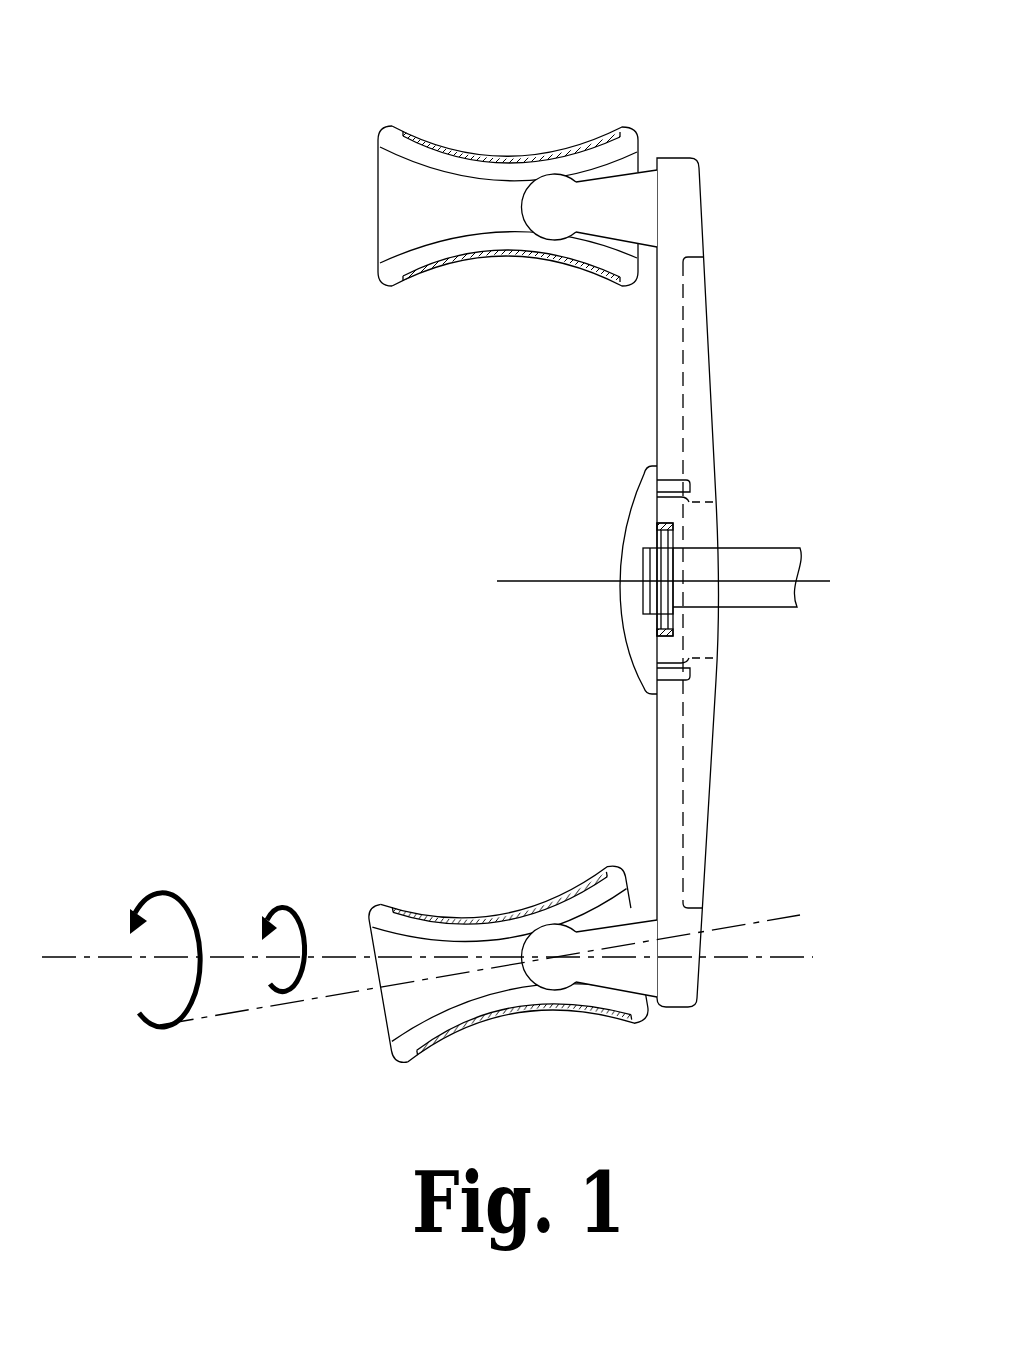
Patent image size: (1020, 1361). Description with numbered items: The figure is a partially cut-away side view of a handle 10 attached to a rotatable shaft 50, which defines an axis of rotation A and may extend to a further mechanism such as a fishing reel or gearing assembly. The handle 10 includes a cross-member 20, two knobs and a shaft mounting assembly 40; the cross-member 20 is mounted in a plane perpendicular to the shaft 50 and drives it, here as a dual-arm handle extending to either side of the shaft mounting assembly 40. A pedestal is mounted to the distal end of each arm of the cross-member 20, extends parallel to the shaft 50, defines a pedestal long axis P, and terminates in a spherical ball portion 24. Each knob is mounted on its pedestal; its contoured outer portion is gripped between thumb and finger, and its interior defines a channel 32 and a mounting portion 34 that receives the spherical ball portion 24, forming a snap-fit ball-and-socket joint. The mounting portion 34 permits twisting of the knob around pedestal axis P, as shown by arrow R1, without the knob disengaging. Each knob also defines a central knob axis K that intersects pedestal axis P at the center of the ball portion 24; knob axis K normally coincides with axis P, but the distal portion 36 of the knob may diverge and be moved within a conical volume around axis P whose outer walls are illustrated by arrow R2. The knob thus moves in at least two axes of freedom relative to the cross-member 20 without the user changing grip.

The handle 10 is at (200, 345).
The cross-member 20 is at (683, 227).
The spherical ball portion 24 is at (545, 215).
The channel 32 is at (403, 208).
The mounting portion 34 is at (545, 165).
The distal portion 36 is at (378, 988).
The shaft mounting assembly 40 is at (600, 523).
The rotatable shaft 50 is at (733, 603).
The axis of rotation A is at (648, 580).
The knob axis K is at (320, 997).
The pedestal long axis P is at (338, 957).
The twisting rotation arrow R1 is at (288, 905).
The conical movement arrow R2 is at (178, 898).